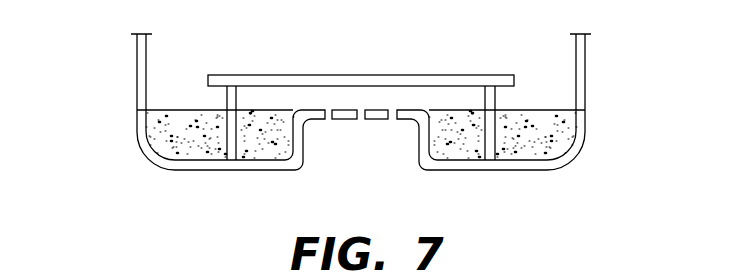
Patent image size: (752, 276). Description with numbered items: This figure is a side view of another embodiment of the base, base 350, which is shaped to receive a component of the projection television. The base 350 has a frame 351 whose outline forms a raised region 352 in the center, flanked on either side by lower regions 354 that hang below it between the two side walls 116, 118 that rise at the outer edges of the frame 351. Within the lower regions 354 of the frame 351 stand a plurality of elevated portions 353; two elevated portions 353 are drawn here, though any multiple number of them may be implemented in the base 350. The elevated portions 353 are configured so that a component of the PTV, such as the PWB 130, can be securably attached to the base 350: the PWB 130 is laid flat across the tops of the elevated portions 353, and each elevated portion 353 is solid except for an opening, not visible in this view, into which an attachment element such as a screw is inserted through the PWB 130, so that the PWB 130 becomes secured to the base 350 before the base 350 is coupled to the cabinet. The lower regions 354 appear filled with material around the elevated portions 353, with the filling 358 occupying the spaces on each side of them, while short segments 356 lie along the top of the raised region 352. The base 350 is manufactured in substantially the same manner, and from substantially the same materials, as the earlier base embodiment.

The first side wall 116 is at (137, 78).
The second side wall 118 is at (585, 77).
The PWB 130 is at (313, 83).
The base 350 is at (607, 105).
The frame 351 is at (150, 155).
The raised region 352 is at (343, 146).
The elevated portions 353 is at (227, 104).
The lower regions 354 is at (191, 179).
The strips 356 is at (393, 121).
The fill material 358 is at (262, 147).